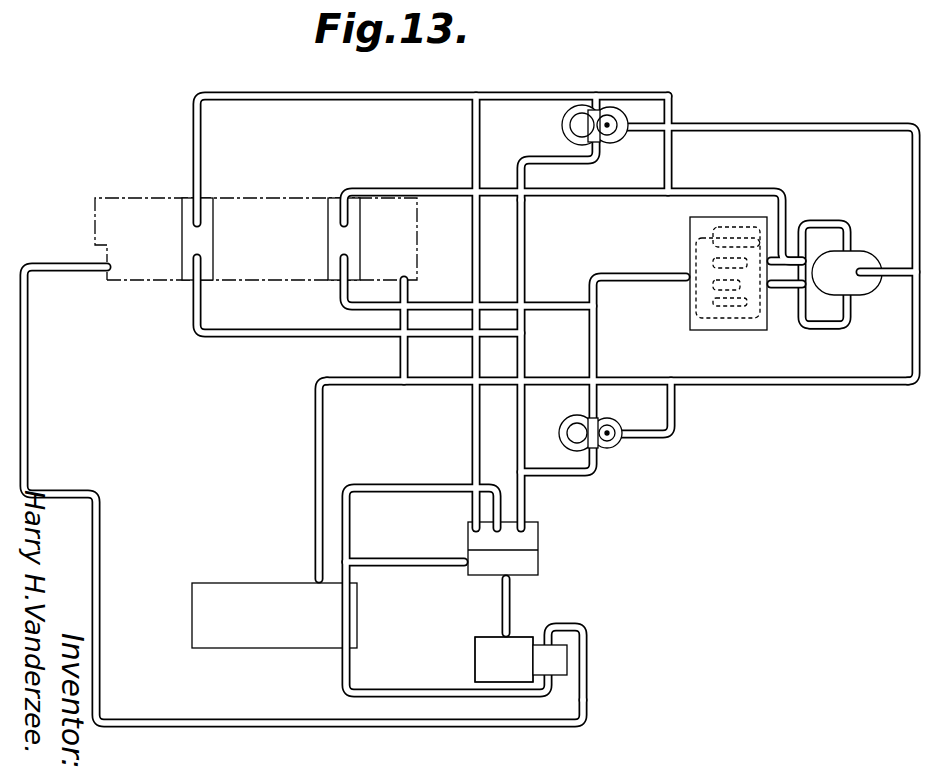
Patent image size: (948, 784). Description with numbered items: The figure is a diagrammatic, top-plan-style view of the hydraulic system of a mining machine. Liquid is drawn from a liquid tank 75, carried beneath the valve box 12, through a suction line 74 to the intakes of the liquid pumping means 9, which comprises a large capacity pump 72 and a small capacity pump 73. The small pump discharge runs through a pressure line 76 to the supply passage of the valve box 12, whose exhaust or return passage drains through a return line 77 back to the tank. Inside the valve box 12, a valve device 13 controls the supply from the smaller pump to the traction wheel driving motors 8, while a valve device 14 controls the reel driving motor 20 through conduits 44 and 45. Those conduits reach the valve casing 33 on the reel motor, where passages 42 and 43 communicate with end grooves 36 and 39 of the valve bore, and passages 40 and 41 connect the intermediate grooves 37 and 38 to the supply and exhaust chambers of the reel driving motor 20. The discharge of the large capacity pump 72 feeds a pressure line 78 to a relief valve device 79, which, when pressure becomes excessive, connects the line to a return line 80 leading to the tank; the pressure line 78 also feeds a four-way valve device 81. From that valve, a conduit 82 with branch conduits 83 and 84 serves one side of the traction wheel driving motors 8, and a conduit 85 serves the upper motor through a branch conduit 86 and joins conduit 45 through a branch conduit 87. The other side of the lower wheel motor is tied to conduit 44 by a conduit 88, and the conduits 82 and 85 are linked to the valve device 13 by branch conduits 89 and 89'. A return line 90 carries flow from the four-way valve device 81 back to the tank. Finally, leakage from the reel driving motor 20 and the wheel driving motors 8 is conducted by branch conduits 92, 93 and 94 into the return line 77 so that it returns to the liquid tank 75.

The traction wheel driving motor 8 is at (562, 125).
The liquid pumping means 9 is at (480, 637).
The valve box 12 is at (120, 198).
The valve device 13 is at (214, 206).
The valve device 14 is at (327, 222).
The reel driving motor 20 is at (872, 257).
The valve casing 33 is at (720, 330).
The annular groove 36 is at (722, 242).
The annular groove 37 is at (712, 262).
The annular groove 38 is at (716, 288).
The annular groove 39 is at (742, 300).
The passage 40 is at (833, 222).
The passage 41 is at (828, 328).
The passage 42 is at (700, 288).
The passage 43 is at (770, 291).
The conduit 44 is at (633, 278).
The conduit 45 is at (760, 190).
The large capacity pump 72 is at (475, 659).
The small capacity pump 73 is at (565, 652).
The suction line 74 is at (397, 696).
The liquid tank 75 is at (224, 584).
The pressure line 76 is at (328, 720).
The return line 77 is at (316, 427).
The pressure line 78 is at (503, 594).
The relief valve device 79 is at (478, 566).
The return line 80 is at (400, 562).
The four-way valve device 81 is at (540, 524).
The conduit 82 is at (518, 447).
The branch conduit 83 is at (590, 158).
The branch conduit 84 is at (573, 474).
The conduit 85 is at (474, 410).
The branch conduit 86 is at (612, 101).
The branch conduit 87 is at (675, 161).
The conduit 88 is at (598, 360).
The branch conduit 89 is at (359, 296).
The branch conduit 89' is at (432, 140).
The return line 90 is at (424, 486).
The branch conduit 92 is at (898, 282).
The branch conduit 93 is at (856, 120).
The branch conduit 94 is at (676, 404).